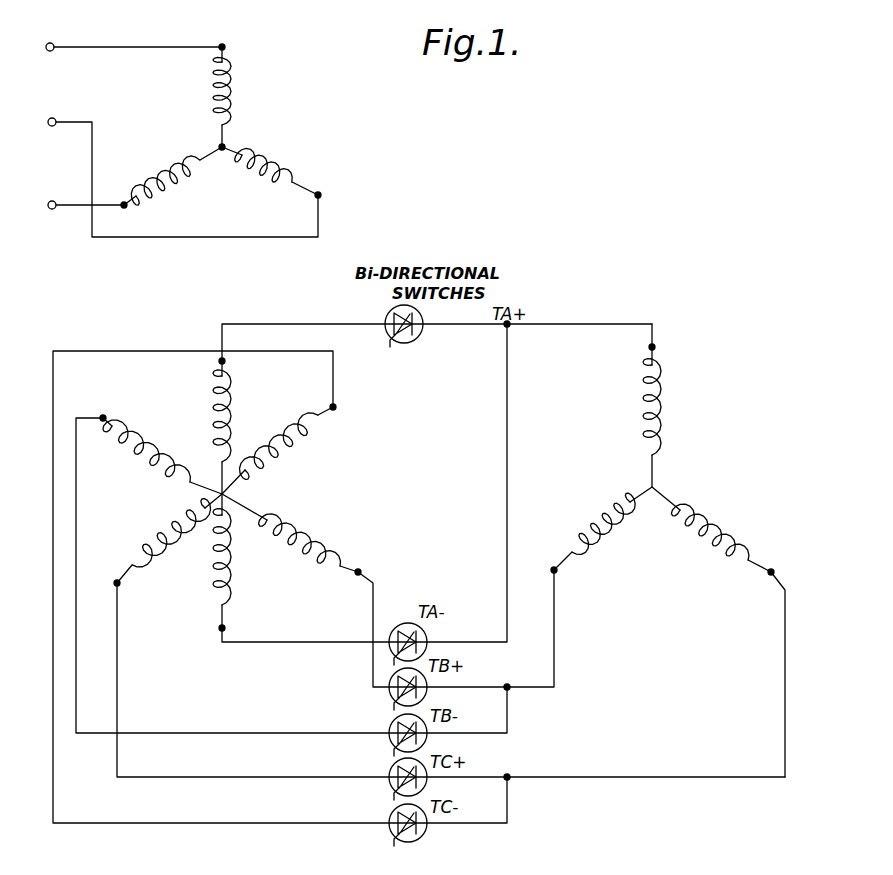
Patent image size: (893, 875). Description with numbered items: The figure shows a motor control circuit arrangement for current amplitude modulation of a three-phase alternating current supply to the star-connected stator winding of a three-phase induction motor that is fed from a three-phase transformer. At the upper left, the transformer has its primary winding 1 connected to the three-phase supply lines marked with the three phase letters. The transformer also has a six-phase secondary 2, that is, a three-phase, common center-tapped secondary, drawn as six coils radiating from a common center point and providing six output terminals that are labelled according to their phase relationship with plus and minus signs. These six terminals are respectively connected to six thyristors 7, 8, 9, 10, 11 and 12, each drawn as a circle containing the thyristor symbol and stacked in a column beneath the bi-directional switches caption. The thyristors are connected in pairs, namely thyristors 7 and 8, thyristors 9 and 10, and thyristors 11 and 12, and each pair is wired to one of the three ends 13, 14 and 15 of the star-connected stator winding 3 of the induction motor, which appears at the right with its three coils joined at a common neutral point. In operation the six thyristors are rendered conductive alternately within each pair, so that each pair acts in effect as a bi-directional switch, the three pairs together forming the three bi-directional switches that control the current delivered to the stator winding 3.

The primary winding 1 is at (197, 140).
The secondary 2 is at (290, 503).
The star-connected stator winding 3 is at (693, 497).
The thyristor 7 is at (412, 342).
The thyristor 8 is at (426, 633).
The thyristor 9 is at (391, 694).
The thyristor 10 is at (392, 740).
The thyristor 11 is at (392, 769).
The thyristor 12 is at (392, 830).
The end of star-connected stator winding 13 is at (656, 346).
The end of star-connected stator winding 14 is at (552, 567).
The end of star-connected stator winding 15 is at (771, 569).